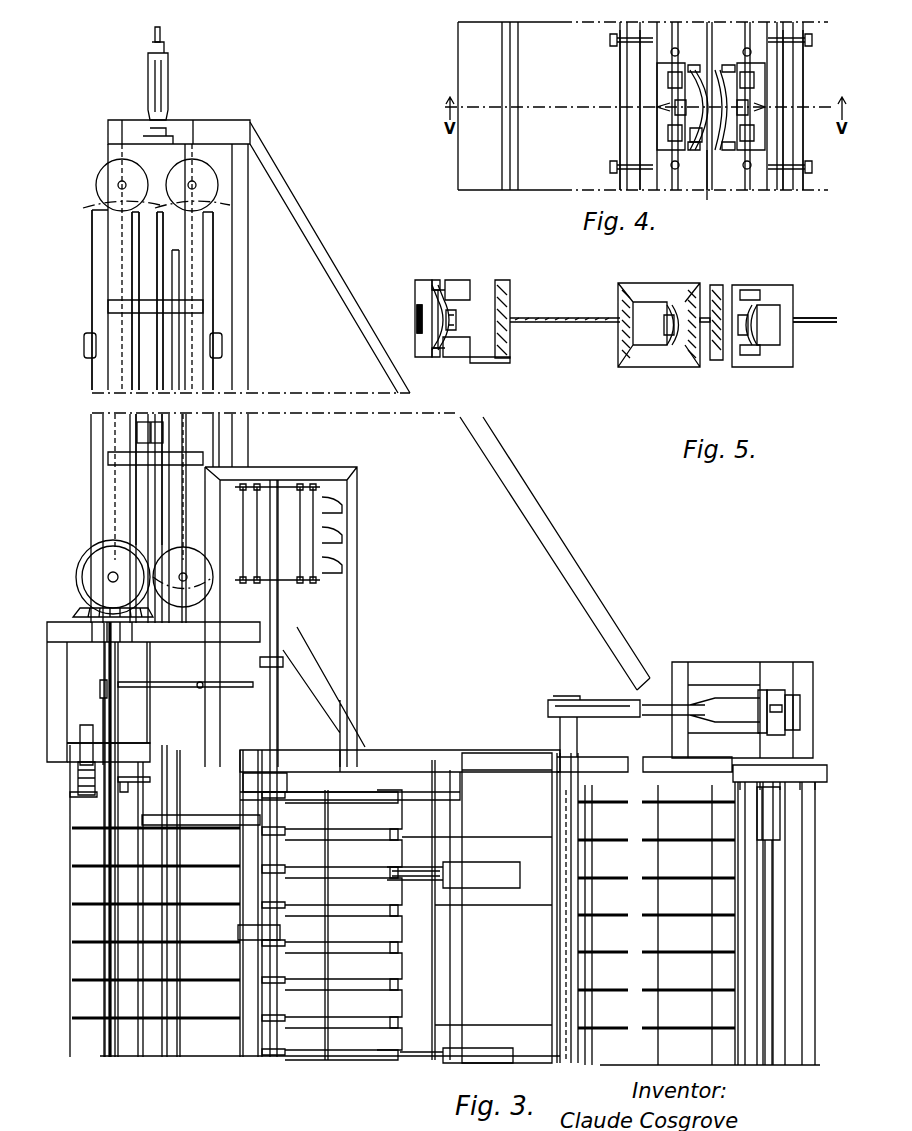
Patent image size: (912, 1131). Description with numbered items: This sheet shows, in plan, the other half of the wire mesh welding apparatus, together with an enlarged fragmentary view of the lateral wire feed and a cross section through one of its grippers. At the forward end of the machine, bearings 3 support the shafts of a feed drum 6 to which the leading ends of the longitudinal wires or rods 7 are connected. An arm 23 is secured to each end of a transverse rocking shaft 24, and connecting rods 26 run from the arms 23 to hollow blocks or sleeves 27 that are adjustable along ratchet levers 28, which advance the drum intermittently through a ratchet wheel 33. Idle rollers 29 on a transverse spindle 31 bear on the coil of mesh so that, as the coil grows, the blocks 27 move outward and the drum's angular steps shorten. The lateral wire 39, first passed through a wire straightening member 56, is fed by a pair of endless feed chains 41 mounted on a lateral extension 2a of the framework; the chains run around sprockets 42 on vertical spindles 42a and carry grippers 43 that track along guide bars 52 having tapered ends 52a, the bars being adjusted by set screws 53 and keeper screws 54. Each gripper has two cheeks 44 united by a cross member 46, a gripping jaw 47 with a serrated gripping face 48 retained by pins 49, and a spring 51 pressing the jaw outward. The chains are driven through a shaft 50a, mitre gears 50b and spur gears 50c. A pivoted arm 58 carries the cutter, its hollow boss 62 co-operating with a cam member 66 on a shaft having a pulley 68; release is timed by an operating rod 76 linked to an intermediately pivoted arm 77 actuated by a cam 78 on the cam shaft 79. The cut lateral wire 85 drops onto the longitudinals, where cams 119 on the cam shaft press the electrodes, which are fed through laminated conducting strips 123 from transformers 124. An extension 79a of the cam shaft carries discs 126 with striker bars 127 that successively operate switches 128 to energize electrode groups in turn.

In FIG. 3, the lateral extension of the framework 2a is at (250, 292).
In FIG. 3, the bearings 3 is at (778, 665).
In FIG. 3, the feed drum 6 is at (730, 975).
In FIG. 3, the longitudinal wires or rods 7 is at (60, 985).
In FIG. 3, the arm 23 is at (580, 720).
In FIG. 3, the transverse rocking shaft 24 is at (578, 897).
In FIG. 3, the connecting rods 26 is at (640, 705).
In FIG. 3, the hollow blocks or sleeves 27 is at (775, 690).
In FIG. 3, the ratchet lever 28 is at (765, 700).
In FIG. 3, the idle rollers 29 is at (755, 818).
In FIG. 3, the transverse spindle 31 is at (765, 897).
In FIG. 3, the ratchet wheel 33 is at (800, 705).
In FIG. 3, the lateral wire 39 is at (160, 30).
In FIG. 4, the lateral wire 39 is at (707, 180).
In FIG. 5, the lateral wire 39 is at (705, 330).
In FIG. 3, the endless feed chains 41 is at (250, 214).
In FIG. 4, the endless feed chains 41 is at (748, 190).
In FIG. 3, the sprockets 42 is at (230, 604).
In FIG. 3, the vertical spindles 42a is at (108, 580).
In FIG. 3, the grippers 43 is at (80, 422).
In FIG. 4, the cheeks 44 is at (760, 88).
In FIG. 5, the cheeks 44 is at (660, 367).
In FIG. 4, the cross member 46 is at (765, 107).
In FIG. 5, the cross member 46 is at (685, 300).
In FIG. 4, the gripping jaw 47 is at (725, 150).
In FIG. 5, the gripping jaw 47 is at (680, 367).
In FIG. 4, the serrated gripping face 48 is at (680, 112).
In FIG. 5, the serrated gripping face 48 is at (720, 360).
In FIG. 4, the pins 49 is at (735, 60).
In FIG. 5, the pins 49 is at (440, 357).
In FIG. 3, the shaft 50a is at (104, 997).
In FIG. 3, the mitre gears 50b is at (86, 608).
In FIG. 3, the spur gears 50c is at (90, 556).
In FIG. 4, the spring 51 is at (700, 145).
In FIG. 5, the spring 51 is at (765, 290).
In FIG. 3, the guide bars 52 is at (135, 275).
In FIG. 4, the guide bars 52 is at (805, 210).
In FIG. 5, the guide bars 52 is at (795, 318).
In FIG. 3, the tapered ends of the guide bars 52a is at (165, 530).
In FIG. 4, the set screws 53 is at (828, 168).
In FIG. 4, the keeper screws 54 is at (830, 41).
In FIG. 3, the wire straightening member 56 is at (170, 78).
In FIG. 3, the pivoted arm 58 is at (140, 777).
In FIG. 3, the hollow boss 62 is at (75, 810).
In FIG. 3, the cam member 66 is at (78, 780).
In FIG. 3, the pulley 68 is at (86, 725).
In FIG. 3, the operating rod 76 is at (112, 708).
In FIG. 3, the intermediately pivoted arm 77 is at (178, 682).
In FIG. 3, the cam 78 is at (285, 797).
In FIG. 3, the cam shaft 79 is at (285, 835).
In FIG. 3, the cam shaft extension 79a is at (285, 495).
In FIG. 3, the cut lateral wire 85 is at (605, 1012).
In FIG. 3, the cams 119 is at (265, 910).
In FIG. 3, the laminated conducting strips 123 is at (355, 1025).
In FIG. 3, the transformers 124 is at (507, 905).
In FIG. 3, the discs 126 is at (352, 585).
In FIG. 3, the bars 127 is at (288, 580).
In FIG. 3, the switches 128 is at (345, 505).